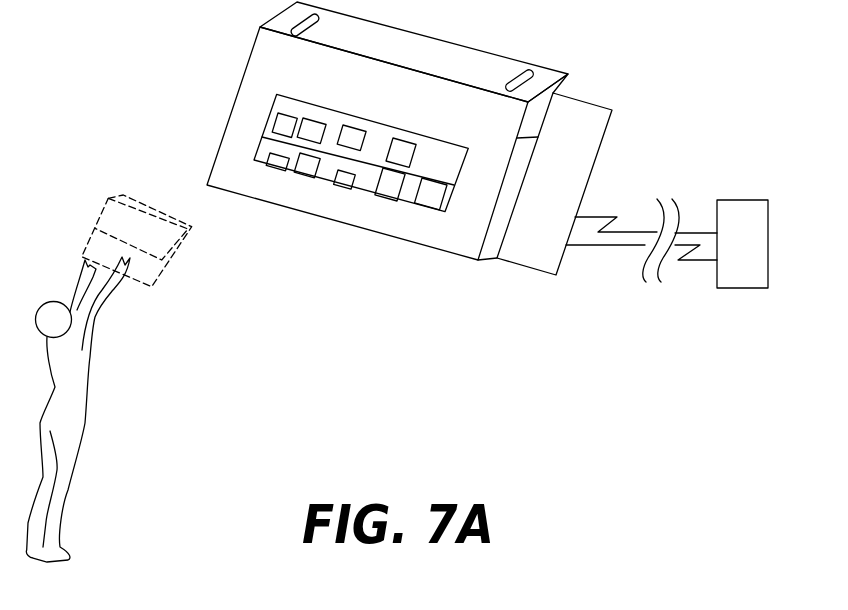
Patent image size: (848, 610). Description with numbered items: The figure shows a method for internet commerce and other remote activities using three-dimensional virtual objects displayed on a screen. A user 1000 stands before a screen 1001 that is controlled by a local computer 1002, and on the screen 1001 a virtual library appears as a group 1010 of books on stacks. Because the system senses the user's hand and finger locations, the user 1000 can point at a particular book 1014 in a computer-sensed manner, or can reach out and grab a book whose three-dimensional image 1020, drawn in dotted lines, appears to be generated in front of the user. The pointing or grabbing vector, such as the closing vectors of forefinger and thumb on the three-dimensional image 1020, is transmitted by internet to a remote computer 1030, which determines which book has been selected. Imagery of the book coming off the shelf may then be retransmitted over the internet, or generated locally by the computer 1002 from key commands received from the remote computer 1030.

The screen 1001 is at (242, 75).
The group of books on stacks 1010 is at (347, 202).
The book 1014 is at (283, 122).
The computer 1002 is at (528, 268).
The remote computer 1030 is at (743, 200).
The 3D image of the book 1020 is at (167, 265).
The user 1000 is at (92, 378).